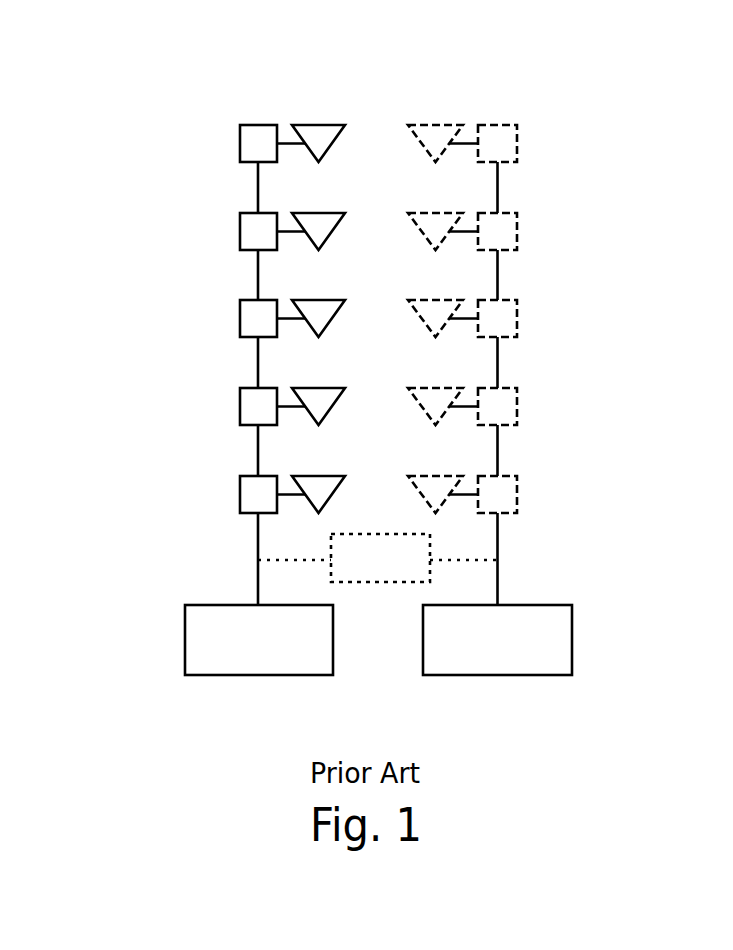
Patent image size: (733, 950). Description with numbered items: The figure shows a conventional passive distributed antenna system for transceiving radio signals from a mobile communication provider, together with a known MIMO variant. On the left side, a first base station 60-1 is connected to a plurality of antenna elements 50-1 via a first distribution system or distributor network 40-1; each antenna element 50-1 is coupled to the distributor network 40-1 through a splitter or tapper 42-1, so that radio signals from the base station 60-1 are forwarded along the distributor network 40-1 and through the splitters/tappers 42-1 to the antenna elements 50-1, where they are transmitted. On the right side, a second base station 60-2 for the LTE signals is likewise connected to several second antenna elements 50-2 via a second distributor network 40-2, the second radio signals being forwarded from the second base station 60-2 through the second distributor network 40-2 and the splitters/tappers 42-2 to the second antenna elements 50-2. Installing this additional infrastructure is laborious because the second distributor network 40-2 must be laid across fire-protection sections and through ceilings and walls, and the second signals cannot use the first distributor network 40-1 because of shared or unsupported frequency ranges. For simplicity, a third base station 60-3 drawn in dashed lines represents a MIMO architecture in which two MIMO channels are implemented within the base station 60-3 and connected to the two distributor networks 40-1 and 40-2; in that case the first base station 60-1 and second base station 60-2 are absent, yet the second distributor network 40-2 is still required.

The first distributor network 40-1 is at (142, 145).
The second distributor network 40-2 is at (633, 145).
The splitter or tapper 42-1 is at (240, 143).
The second splitter or tapper 42-2 is at (517, 143).
The antenna element 50-1 is at (278, 121).
The second antenna element 50-2 is at (402, 121).
The first base station 60-1 is at (258, 676).
The second base station 60-2 is at (498, 676).
The third base station 60-3 is at (431, 578).